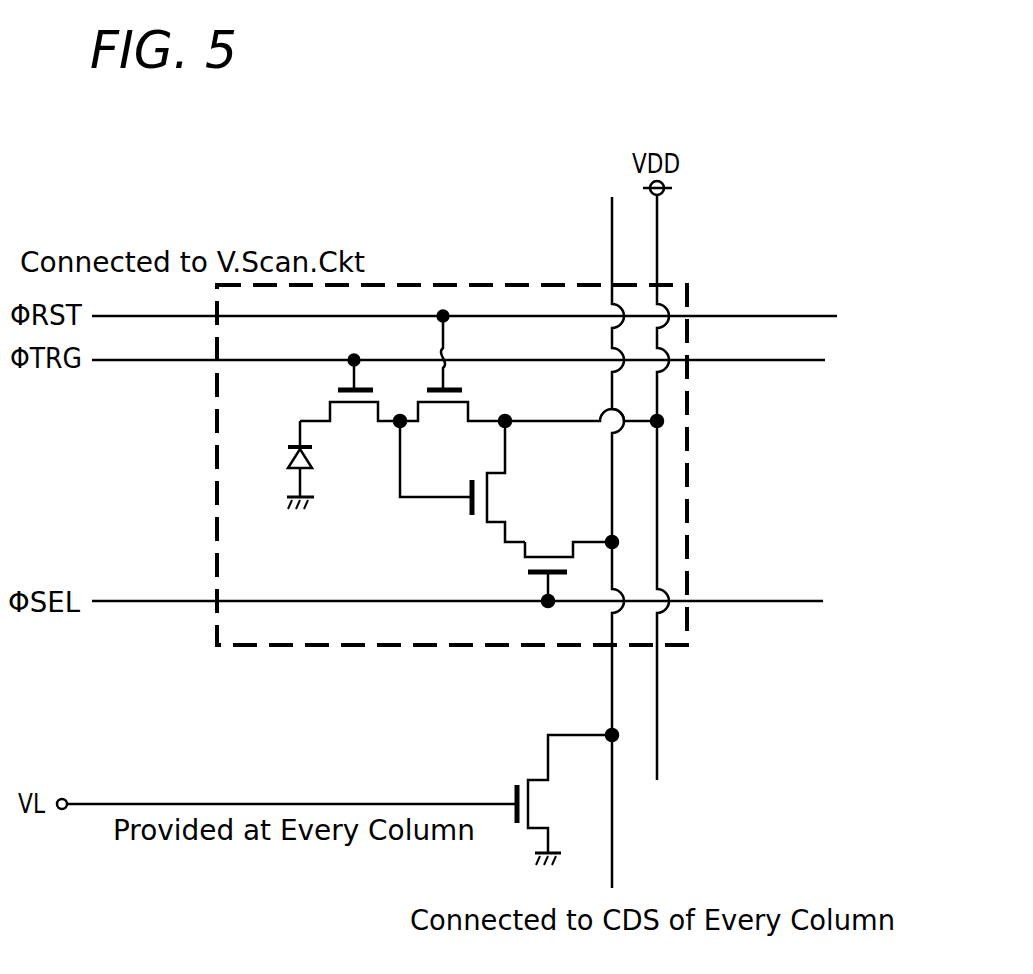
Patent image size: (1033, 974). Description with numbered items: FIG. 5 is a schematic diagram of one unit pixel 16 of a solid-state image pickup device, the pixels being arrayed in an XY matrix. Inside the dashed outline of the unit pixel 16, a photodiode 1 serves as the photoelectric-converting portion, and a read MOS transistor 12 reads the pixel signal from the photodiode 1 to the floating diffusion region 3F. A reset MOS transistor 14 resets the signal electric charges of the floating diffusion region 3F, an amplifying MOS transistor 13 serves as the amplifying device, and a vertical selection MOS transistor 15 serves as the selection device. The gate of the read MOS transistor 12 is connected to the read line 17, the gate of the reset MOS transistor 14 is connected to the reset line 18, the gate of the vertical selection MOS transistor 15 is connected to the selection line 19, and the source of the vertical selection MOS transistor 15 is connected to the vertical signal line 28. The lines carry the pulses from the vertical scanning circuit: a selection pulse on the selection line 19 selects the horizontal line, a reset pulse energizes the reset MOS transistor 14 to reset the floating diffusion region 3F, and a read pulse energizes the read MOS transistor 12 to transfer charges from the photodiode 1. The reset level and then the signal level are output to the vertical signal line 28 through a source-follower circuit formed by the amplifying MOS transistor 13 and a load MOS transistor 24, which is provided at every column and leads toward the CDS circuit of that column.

The photodiode 1 is at (292, 460).
The read MOS transistor 12 is at (322, 388).
The floating diffusion region 3F is at (400, 419).
The reset MOS transistor 14 is at (467, 395).
The amplifying MOS transistor 13 is at (500, 484).
The vertical selection MOS transistor 15 is at (561, 556).
The unit pixel 16 is at (687, 440).
The read line 17 is at (778, 362).
The reset line 18 is at (780, 316).
The selection line 19 is at (760, 601).
The vertical signal line 28 is at (612, 200).
The load MOS transistor 24 is at (520, 790).